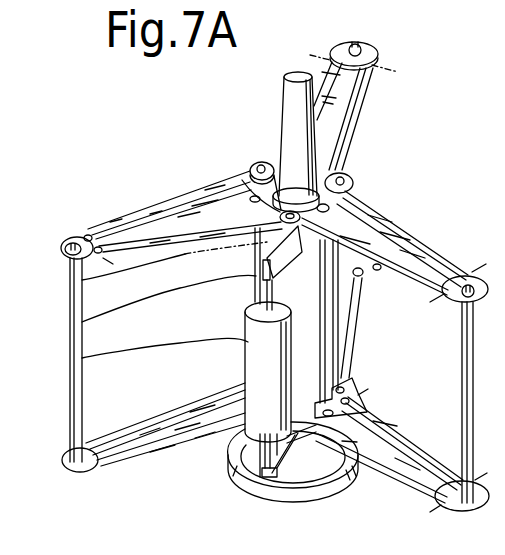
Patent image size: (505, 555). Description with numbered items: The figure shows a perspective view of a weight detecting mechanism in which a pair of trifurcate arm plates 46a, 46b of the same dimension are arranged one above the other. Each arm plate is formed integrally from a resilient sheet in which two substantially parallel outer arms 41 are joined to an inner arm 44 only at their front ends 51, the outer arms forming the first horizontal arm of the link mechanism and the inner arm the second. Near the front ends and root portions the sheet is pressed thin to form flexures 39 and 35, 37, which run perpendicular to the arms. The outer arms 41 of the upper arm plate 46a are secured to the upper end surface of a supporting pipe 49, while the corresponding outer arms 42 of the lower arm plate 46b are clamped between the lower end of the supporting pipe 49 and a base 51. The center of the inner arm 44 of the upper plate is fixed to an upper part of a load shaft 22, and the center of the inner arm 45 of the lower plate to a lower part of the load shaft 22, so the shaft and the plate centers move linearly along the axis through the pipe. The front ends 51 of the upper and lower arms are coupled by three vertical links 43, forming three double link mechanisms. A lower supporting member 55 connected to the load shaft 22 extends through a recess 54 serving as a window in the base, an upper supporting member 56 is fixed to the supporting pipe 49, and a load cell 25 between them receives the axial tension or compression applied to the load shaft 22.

The load shaft 22 is at (282, 97).
The flexure 35 is at (259, 162).
The flexure 37 is at (234, 198).
The flexure 39 is at (87, 235).
The outer arm 41 is at (153, 238).
The inner arm 44 is at (152, 206).
The front ends 51 is at (65, 244).
The vertical link 43 is at (70, 411).
The upper supporting member 56 is at (80, 282).
The supporting pipe 49 is at (80, 320).
The load cell 25 is at (80, 358).
The lower left upper bar 42 is at (122, 447).
The inner arm 45 is at (173, 437).
The upper trifurcate arm plate 46a is at (393, 213).
The lower trifurcate arm plate 46b is at (384, 482).
The lower supporting member 55 is at (277, 477).
The recess 54 is at (293, 460).